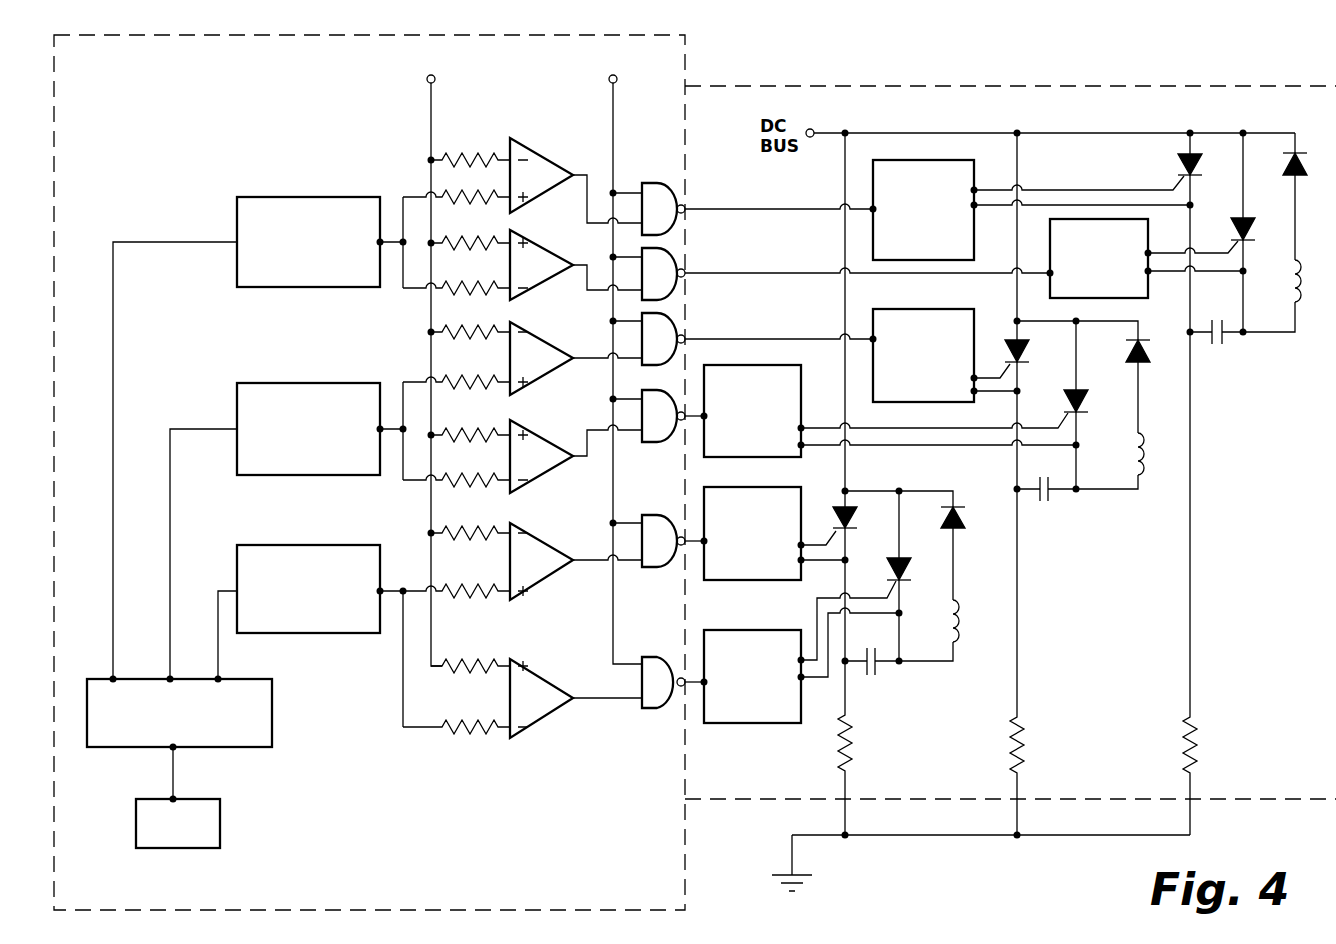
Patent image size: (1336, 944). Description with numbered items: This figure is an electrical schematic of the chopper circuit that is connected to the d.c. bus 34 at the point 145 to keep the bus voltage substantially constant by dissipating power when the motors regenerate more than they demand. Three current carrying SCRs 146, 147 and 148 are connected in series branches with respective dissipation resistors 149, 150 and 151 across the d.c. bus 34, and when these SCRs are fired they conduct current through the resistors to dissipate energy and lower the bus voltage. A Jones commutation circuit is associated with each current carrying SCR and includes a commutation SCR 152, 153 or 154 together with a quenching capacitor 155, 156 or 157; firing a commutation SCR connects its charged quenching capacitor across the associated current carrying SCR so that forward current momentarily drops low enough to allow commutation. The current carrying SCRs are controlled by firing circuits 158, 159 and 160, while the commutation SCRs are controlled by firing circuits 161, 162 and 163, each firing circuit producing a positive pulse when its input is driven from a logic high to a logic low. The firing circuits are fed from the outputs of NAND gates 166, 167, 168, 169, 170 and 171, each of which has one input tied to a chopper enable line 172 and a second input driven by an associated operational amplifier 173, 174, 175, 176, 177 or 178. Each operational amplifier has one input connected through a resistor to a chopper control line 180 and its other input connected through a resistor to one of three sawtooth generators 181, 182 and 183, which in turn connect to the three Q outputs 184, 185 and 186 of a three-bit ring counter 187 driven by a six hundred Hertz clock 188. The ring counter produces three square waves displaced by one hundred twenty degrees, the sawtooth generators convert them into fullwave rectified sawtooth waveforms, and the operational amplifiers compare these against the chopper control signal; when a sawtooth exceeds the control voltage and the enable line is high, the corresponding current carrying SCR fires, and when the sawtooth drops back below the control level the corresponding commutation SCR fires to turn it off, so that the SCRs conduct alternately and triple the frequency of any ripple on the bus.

The d.c. bus 34 is at (1077, 133).
The point 145 is at (814, 129).
The current carrying SCR 146 is at (838, 507).
The current carrying SCR 147 is at (1005, 333).
The current carrying SCR 148 is at (1178, 170).
The dissipation resistor 149 is at (852, 742).
The dissipation resistor 150 is at (1024, 740).
The dissipation resistor 151 is at (1183, 730).
The commutation SCR 152 is at (928, 549).
The commutation SCR 153 is at (1081, 389).
The commutation SCR 154 is at (1255, 227).
The quenching capacitor 155 is at (878, 672).
The quenching capacitor 156 is at (1050, 497).
The quenching capacitor 157 is at (1218, 346).
The firing circuit 158 is at (745, 580).
The firing circuit 159 is at (918, 309).
The firing circuit 160 is at (926, 160).
The firing circuit 161 is at (730, 723).
The firing circuit 162 is at (765, 365).
The firing circuit 163 is at (1125, 298).
The NAND gate 166 is at (657, 183).
The NAND gate 167 is at (672, 256).
The NAND gate 168 is at (684, 322).
The NAND gate 169 is at (650, 442).
The NAND gate 170 is at (655, 567).
The NAND gate 171 is at (668, 657).
The chopper enable line 172 is at (609, 79).
The operational amplifier 173 is at (549, 141).
The operational amplifier 174 is at (569, 250).
The operational amplifier 175 is at (552, 340).
The operational amplifier 176 is at (549, 428).
The operational amplifier 177 is at (546, 534).
The operational amplifier 178 is at (545, 670).
The chopper control line 180 is at (436, 84).
The sawtooth generator 181 is at (346, 197).
The sawtooth generator 182 is at (342, 383).
The sawtooth generator 183 is at (350, 545).
The Q output 184 is at (114, 679).
The Q output 185 is at (171, 679).
The Q output 186 is at (219, 679).
The 3-bit ring counter 187 is at (272, 716).
The 600 Hertz clock 188 is at (220, 826).